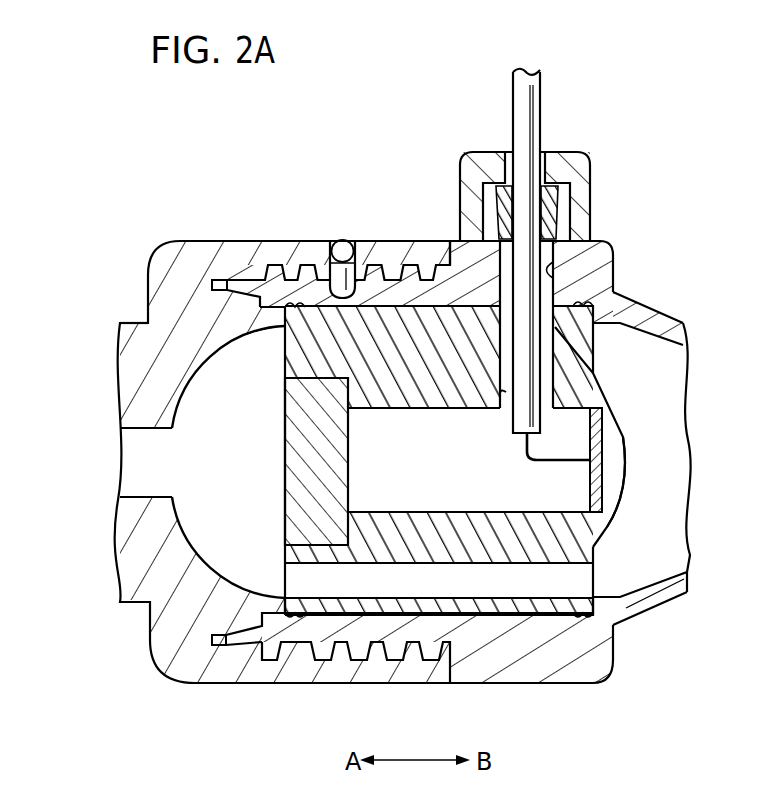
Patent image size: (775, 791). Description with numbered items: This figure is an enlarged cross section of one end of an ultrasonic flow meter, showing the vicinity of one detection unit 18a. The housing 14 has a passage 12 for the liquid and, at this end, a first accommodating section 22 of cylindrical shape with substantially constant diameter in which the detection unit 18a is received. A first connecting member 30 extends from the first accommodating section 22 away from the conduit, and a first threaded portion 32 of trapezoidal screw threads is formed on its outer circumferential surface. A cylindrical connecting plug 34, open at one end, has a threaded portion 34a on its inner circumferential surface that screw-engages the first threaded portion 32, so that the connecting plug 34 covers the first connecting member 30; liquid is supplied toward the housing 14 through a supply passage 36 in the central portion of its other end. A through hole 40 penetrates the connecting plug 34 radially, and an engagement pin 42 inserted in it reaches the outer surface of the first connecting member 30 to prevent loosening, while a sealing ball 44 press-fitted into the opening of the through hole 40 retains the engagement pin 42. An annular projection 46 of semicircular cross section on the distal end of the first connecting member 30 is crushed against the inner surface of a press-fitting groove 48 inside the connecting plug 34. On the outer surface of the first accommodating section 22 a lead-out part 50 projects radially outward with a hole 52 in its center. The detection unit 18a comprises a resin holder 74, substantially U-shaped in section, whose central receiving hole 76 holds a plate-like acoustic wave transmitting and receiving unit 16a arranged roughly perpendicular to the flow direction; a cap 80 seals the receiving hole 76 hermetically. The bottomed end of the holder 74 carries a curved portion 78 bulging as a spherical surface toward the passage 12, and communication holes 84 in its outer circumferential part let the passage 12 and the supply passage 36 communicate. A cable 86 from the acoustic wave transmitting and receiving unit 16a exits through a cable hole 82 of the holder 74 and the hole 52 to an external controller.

The passage 12 is at (667, 507).
The housing 14 is at (649, 622).
The acoustic wave transmitting and receiving unit 16a is at (586, 488).
The detection unit 18a is at (624, 407).
The first accommodating section 22 is at (557, 686).
The first connecting member 30 is at (378, 293).
The first threaded portion 32 is at (277, 266).
The connecting plug 34 is at (161, 674).
The threaded portion 34a is at (425, 264).
The supply passage 36 is at (140, 440).
The through hole 40 is at (282, 338).
The engagement pin 42 is at (330, 275).
The sealing ball 44 is at (343, 241).
The annular projection 46 is at (228, 279).
The press-fitting groove 48 is at (236, 284).
The lead-out part 50 is at (565, 199).
The hole 52 is at (545, 265).
The holder 74 is at (616, 518).
The receiving hole 76 is at (360, 467).
The curved portion 78 is at (615, 461).
The cap 80 is at (297, 515).
The cable hole 82 is at (506, 396).
The communication hole 84 is at (480, 588).
The cable 86 is at (526, 104).